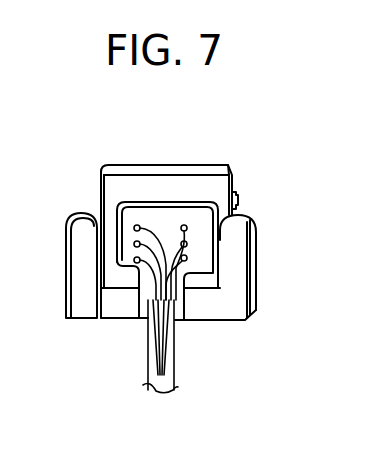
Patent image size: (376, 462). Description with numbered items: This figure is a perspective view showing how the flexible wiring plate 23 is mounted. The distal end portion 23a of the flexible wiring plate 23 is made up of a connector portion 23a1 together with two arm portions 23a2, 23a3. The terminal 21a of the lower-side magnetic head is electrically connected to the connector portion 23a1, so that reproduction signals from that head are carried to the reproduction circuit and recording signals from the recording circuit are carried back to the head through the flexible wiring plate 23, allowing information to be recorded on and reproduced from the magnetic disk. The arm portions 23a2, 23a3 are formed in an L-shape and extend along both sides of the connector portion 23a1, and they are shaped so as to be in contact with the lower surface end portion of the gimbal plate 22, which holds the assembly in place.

The terminal 21a is at (184, 225).
The gimbal plate 22 is at (238, 187).
The flexible wiring plate 23 is at (153, 391).
The distal end portion 23a is at (190, 322).
The connector portion 23a1 is at (207, 242).
The arm portion 23a2 is at (73, 283).
The arm portion 23a3 is at (240, 293).